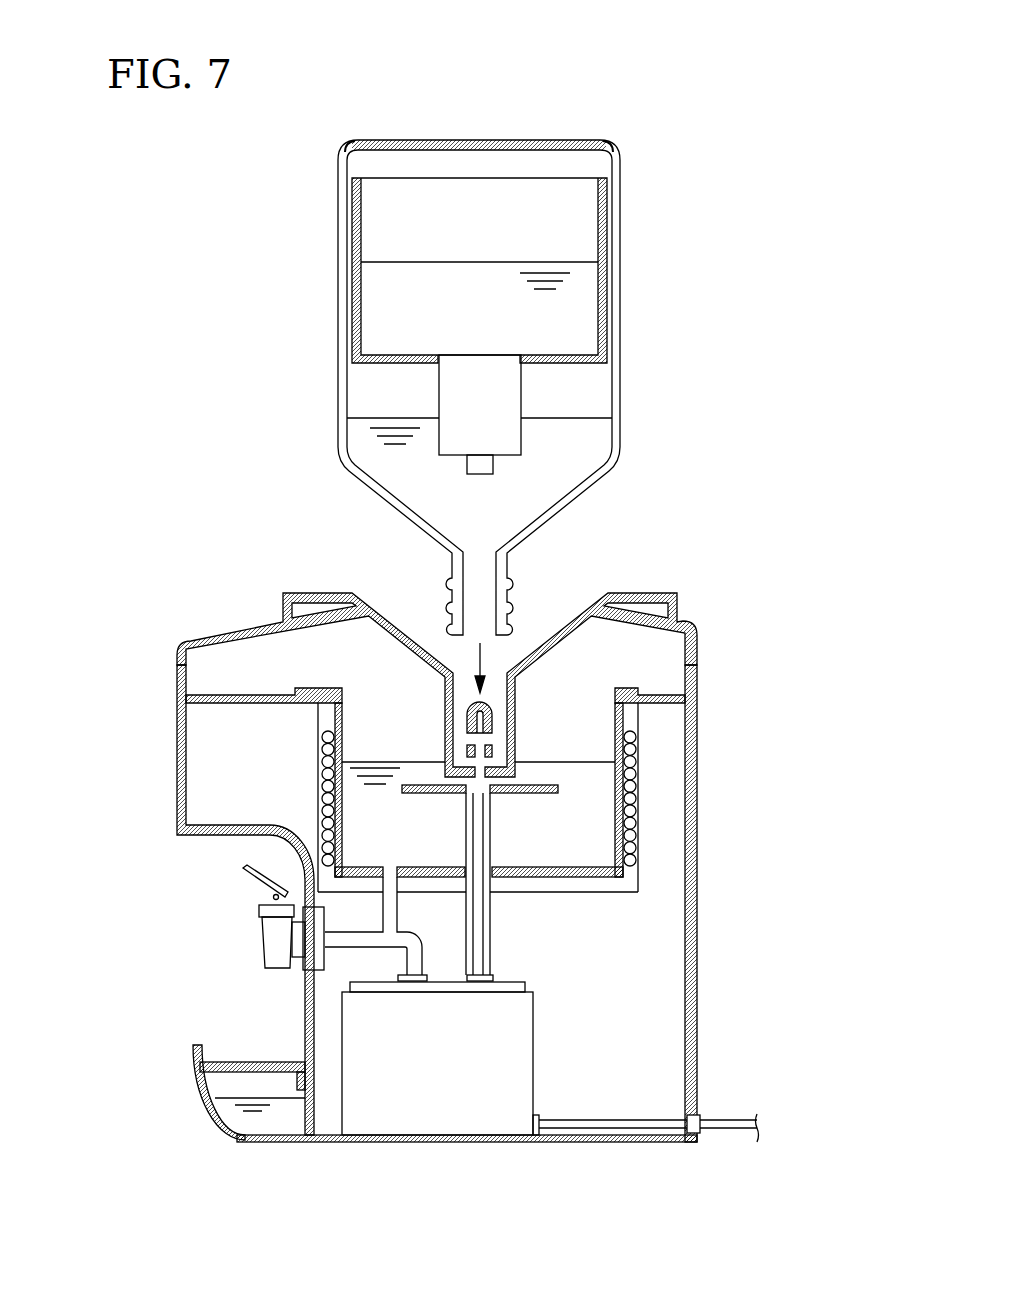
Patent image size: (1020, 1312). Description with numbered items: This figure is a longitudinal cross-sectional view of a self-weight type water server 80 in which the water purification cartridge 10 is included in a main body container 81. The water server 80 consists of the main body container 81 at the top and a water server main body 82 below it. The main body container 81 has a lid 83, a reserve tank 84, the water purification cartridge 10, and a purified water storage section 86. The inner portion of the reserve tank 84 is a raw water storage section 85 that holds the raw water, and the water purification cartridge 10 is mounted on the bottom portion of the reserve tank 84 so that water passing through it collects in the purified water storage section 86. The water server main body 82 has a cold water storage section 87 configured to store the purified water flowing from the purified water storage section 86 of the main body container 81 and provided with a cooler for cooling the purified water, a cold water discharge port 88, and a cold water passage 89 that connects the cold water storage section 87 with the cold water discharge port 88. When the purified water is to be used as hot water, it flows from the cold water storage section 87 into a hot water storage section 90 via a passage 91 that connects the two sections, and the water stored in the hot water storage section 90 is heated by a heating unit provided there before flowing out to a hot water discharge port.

The water server 80 is at (478, 84).
The main body container 81 is at (620, 372).
The water server main body 82 is at (158, 636).
The lid 83 is at (575, 140).
The reserve tank 84 is at (352, 278).
The raw water storage section 85 is at (572, 315).
The purified water storage section 86 is at (558, 467).
The cold water storage section 87 is at (587, 808).
The cold water discharge port 88 is at (270, 937).
The cold water passage 89 is at (383, 903).
The hot water storage section 90 is at (500, 1050).
The passage 91 is at (490, 932).
The water purification cartridge 10 is at (458, 402).